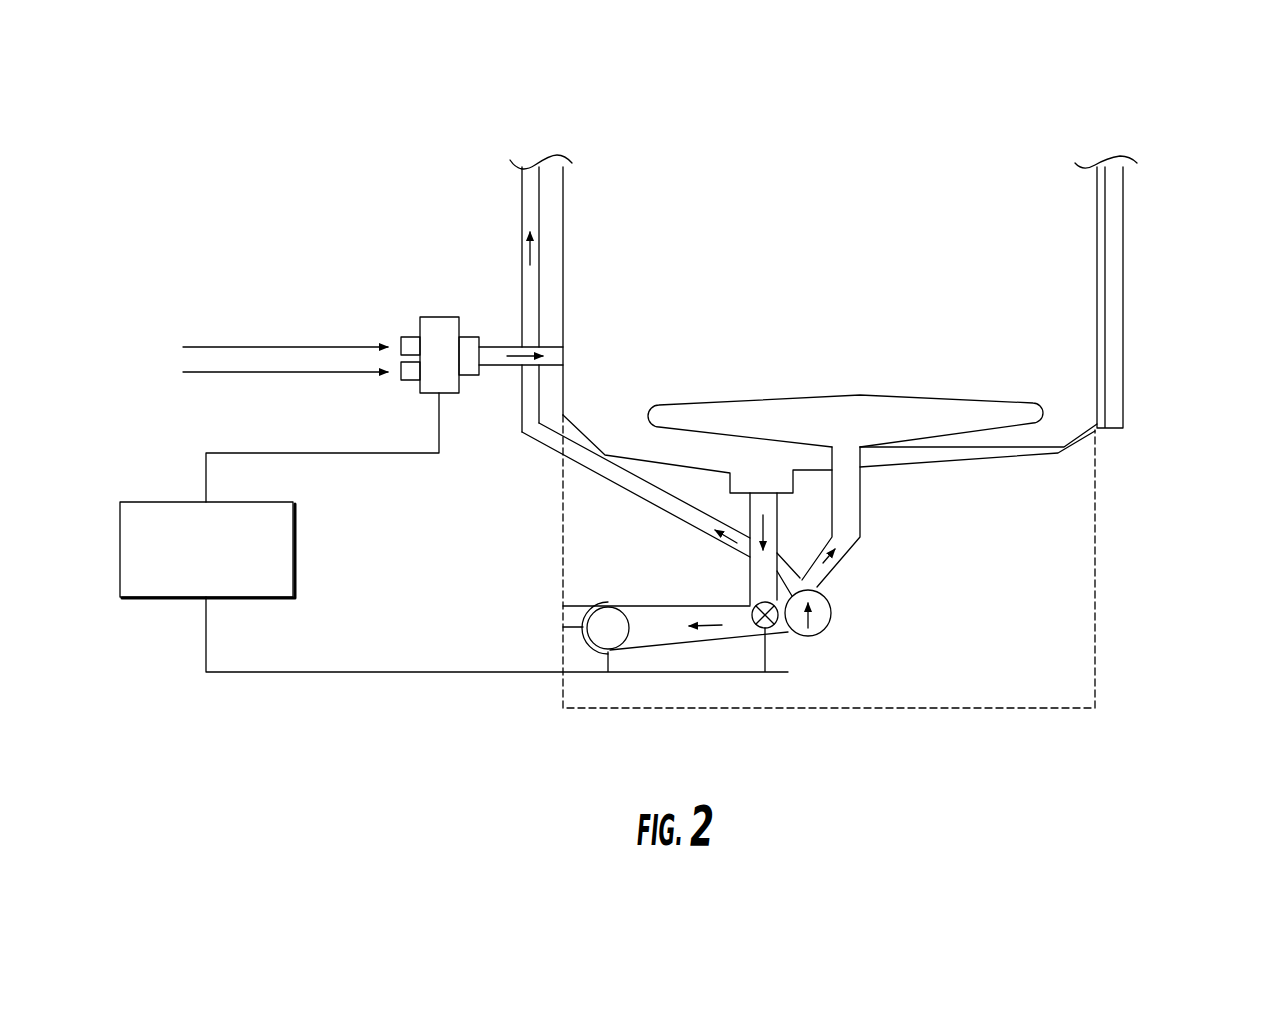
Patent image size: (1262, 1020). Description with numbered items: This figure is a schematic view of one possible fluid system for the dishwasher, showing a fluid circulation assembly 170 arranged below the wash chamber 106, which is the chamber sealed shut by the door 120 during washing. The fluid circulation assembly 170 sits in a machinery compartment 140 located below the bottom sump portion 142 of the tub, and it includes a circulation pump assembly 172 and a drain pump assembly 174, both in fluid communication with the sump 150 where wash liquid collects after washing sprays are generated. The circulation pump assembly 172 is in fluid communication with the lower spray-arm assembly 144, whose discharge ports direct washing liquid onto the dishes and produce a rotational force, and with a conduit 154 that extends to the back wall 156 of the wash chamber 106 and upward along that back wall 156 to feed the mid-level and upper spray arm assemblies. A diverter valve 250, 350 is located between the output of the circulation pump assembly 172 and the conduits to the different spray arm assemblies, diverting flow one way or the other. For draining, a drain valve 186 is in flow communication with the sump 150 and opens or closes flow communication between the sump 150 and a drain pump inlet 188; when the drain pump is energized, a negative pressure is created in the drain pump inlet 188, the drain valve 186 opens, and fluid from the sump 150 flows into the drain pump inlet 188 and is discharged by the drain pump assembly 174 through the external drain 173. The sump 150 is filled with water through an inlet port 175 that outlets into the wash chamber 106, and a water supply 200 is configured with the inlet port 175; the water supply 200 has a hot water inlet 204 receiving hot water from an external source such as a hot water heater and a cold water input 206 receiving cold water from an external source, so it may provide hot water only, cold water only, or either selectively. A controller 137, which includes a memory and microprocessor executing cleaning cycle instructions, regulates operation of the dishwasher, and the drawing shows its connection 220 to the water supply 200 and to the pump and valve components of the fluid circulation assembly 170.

The wash chamber 106 is at (996, 150).
The door 120 is at (1123, 268).
The back wall 156 is at (563, 190).
The conduit 154 is at (563, 452).
The inlet port 175 is at (563, 352).
The water supply 200 is at (390, 310).
The hot water inlet 204 is at (215, 347).
The cold water input 206 is at (215, 373).
The controller 137 is at (190, 517).
The control line 220 is at (303, 455).
The lower spray-arm assembly 144 is at (903, 408).
The sump 150 is at (764, 476).
The bottom sump portion 142 is at (967, 458).
The machinery compartment 140 is at (1095, 583).
The diverter valve 250 is at (827, 587).
The diverter valve 350 is at (873, 577).
The fluid circulation assembly 170 is at (920, 607).
The circulation pump assembly 172 is at (831, 616).
The drain valve 186 is at (767, 630).
The drain pump inlet 188 is at (700, 643).
The drain pump assembly 174 is at (608, 627).
The external drain 173 is at (557, 618).